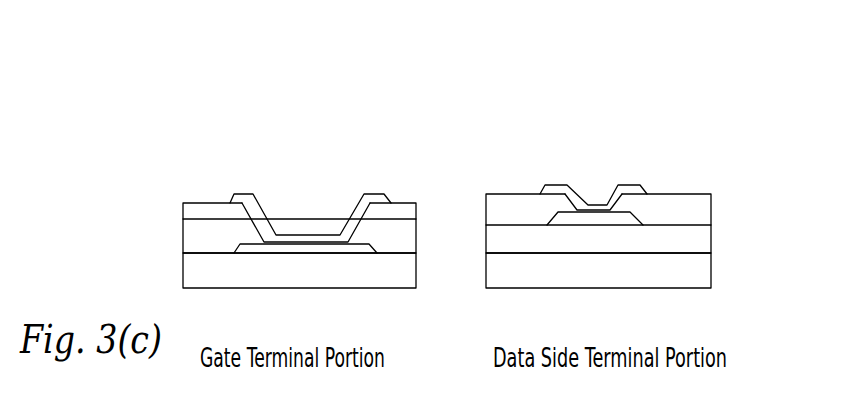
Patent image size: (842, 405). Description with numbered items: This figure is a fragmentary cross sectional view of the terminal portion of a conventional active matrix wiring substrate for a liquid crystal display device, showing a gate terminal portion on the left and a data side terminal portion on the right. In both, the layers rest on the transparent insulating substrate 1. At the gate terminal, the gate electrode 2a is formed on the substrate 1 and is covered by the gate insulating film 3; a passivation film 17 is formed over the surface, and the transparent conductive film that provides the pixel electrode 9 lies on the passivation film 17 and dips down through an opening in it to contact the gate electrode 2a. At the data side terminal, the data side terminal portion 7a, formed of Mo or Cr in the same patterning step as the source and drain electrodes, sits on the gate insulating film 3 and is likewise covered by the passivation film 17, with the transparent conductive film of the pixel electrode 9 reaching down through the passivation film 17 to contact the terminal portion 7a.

The transparent insulating substrate 1 is at (407, 291).
The gate insulating film 3 is at (484, 243).
The passivation film 17 is at (409, 198).
The gate electrode 2a is at (235, 244).
The data side terminal portion 7a is at (646, 222).
The pixel electrode 9 is at (375, 192).